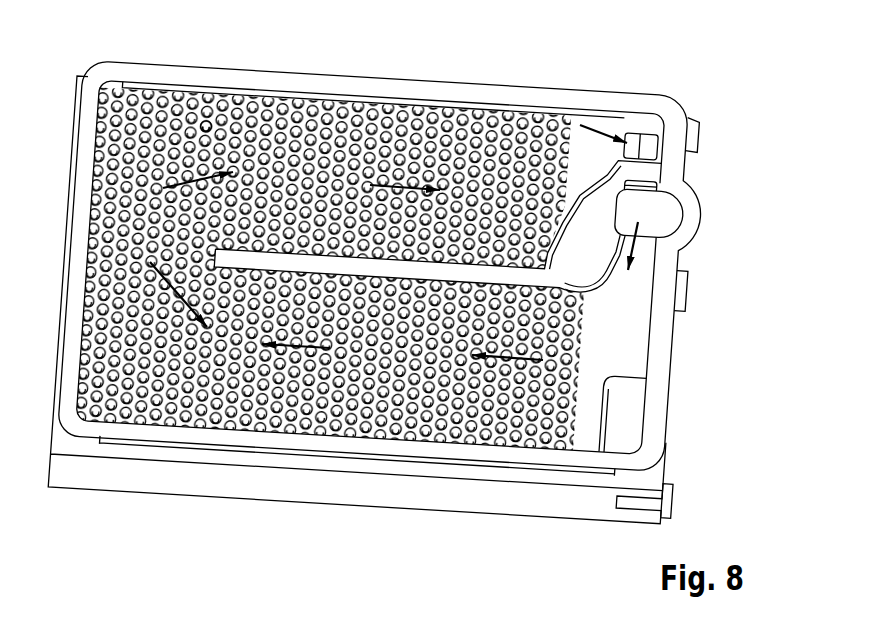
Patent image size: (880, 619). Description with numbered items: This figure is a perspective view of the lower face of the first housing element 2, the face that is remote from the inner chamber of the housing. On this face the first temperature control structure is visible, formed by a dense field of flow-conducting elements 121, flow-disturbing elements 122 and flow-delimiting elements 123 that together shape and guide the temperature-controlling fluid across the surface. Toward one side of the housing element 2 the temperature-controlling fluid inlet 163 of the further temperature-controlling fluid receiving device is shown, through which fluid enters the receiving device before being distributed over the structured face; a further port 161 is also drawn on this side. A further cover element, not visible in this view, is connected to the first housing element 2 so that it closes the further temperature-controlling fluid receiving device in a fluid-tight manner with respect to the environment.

The first housing element 2 is at (675, 73).
The flow-conducting elements 121 is at (363, 270).
The flow-disturbing elements 122 is at (206, 124).
The flow-delimiting elements 123 is at (164, 86).
The coolant port 161 is at (640, 148).
The temperature-controlling fluid inlet 163 is at (633, 217).